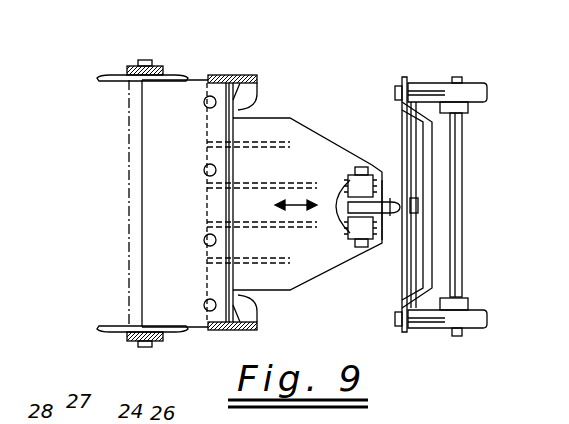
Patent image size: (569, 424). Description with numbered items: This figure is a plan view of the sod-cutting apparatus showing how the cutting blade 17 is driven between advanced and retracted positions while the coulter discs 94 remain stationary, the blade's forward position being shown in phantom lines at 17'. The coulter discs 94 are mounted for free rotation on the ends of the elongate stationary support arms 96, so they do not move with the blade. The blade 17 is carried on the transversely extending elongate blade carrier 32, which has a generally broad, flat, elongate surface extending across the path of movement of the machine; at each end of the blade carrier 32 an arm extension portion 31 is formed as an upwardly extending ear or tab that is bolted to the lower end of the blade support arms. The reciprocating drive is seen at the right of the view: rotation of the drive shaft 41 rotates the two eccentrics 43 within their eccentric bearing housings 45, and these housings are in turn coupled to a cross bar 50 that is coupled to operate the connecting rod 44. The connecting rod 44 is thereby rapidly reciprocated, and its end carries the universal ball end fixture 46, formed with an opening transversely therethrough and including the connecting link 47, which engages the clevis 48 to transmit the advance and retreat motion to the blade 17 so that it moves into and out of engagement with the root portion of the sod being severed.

The blade 17 is at (223, 202).
The forward phantom line position 17' is at (99, 241).
The coulter discs 94 is at (115, 83).
The stationary support arms 96 is at (160, 72).
The arm extension portion 31 is at (245, 102).
The blade carrier 32 is at (305, 145).
The universal ball end fixture 46 is at (357, 198).
The clevis 48 is at (355, 228).
The connecting rod 44 is at (382, 222).
The connecting link 47 is at (370, 250).
The cross bar 50 is at (405, 280).
The drive shaft 41 is at (460, 188).
The eccentrics 43 is at (470, 108).
The eccentric bearing housings 45 is at (487, 92).